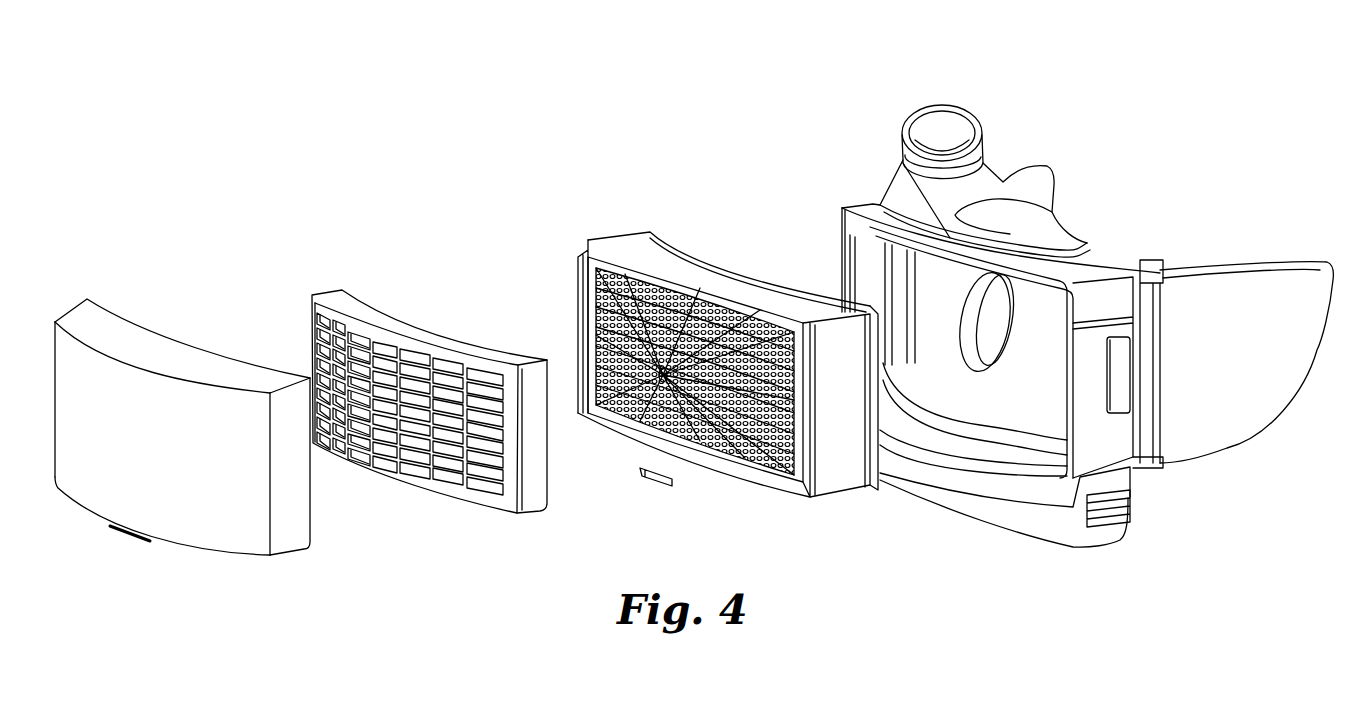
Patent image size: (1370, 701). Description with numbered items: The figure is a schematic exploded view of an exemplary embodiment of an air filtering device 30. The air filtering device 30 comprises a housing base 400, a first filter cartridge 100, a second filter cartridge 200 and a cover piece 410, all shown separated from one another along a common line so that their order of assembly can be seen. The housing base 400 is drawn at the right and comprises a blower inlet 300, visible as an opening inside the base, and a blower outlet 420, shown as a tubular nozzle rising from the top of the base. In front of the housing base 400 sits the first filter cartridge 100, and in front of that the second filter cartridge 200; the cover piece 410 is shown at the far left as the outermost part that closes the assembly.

The air filtering device 30 is at (1086, 62).
The first filter cartridge 100 is at (735, 258).
The second filter cartridge 200 is at (414, 321).
The blower inlet 300 is at (1007, 347).
The housing base 400 is at (1116, 233).
The cover piece 410 is at (168, 355).
The blower outlet 420 is at (951, 113).